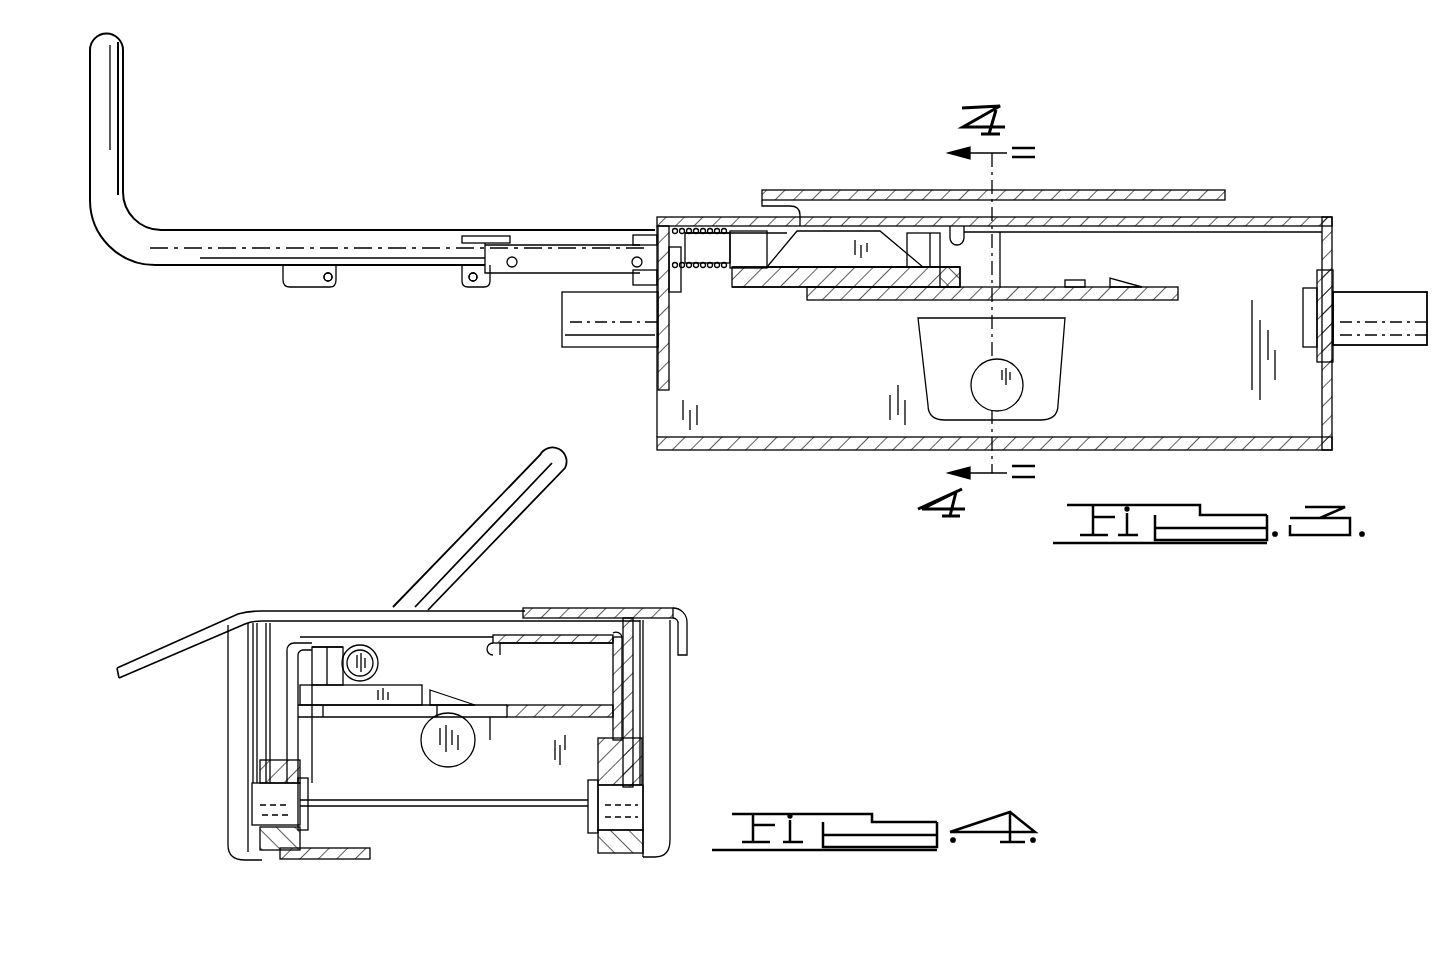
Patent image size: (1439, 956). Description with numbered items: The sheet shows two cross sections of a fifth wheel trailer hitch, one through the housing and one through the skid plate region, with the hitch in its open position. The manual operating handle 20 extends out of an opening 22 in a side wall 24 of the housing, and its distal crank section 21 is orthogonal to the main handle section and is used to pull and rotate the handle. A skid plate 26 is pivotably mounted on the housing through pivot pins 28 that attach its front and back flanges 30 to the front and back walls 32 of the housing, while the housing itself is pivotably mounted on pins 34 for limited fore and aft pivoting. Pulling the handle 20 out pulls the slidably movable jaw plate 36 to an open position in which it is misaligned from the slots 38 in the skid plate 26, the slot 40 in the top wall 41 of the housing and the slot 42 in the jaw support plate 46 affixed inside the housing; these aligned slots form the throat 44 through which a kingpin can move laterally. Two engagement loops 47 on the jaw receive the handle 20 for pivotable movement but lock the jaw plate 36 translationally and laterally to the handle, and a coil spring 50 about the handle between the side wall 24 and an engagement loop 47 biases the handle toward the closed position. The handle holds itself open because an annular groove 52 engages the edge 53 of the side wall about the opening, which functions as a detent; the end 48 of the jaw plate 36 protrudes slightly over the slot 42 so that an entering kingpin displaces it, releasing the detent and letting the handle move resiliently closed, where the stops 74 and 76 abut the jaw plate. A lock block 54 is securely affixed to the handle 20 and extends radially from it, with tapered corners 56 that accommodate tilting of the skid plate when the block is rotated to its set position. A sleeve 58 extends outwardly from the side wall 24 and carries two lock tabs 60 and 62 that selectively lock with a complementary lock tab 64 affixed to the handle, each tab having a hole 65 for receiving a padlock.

In FIG. 3, the manual operating handle 20 is at (370, 235).
In FIG. 4, the manual operating handle 20 is at (380, 663).
In FIG. 3, the distal crank section 21 is at (113, 100).
In FIG. 4, the distal crank section 21 is at (488, 508).
In FIG. 3, the opening 22 is at (648, 236).
In FIG. 3, the side wall 24 is at (672, 385).
In FIG. 4, the side wall 24 is at (368, 787).
In FIG. 3, the skid plate 26 is at (1180, 192).
In FIG. 4, the skid plate 26 is at (600, 610).
In FIG. 3, the pivot pins 28 is at (1020, 385).
In FIG. 4, the pivot pins 28 is at (275, 805).
In FIG. 4, the front and back flanges 30 is at (235, 770).
In FIG. 4, the front and back walls 32 is at (290, 778).
In FIG. 3, the pins 34 is at (580, 347).
In FIG. 4, the pins 34 is at (445, 755).
In FIG. 3, the jaw plate 36 is at (765, 290).
In FIG. 4, the jaw plate 36 is at (405, 705).
In FIG. 3, the slots 38 is at (1035, 190).
In FIG. 4, the slots 38 is at (350, 615).
In FIG. 3, the slot 40 is at (957, 243).
In FIG. 4, the slot 40 is at (505, 640).
In FIG. 3, the top wall 41 is at (1290, 215).
In FIG. 4, the top wall 41 is at (555, 645).
In FIG. 3, the slot 42 is at (1010, 300).
In FIG. 4, the slot 42 is at (492, 720).
In FIG. 3, the throat 44 is at (1065, 255).
In FIG. 4, the throat 44 is at (245, 725).
In FIG. 3, the jaw support plate 46 is at (855, 300).
In FIG. 4, the jaw support plate 46 is at (540, 720).
In FIG. 3, the engagement loops 47 is at (745, 255).
In FIG. 4, the engagement loops 47 is at (340, 648).
In FIG. 3, the end 48 is at (975, 272).
In FIG. 3, the coil spring 50 is at (712, 232).
In FIG. 3, the annular groove 52 is at (678, 235).
In FIG. 3, the edge 53 is at (575, 322).
In FIG. 3, the lock block 54 is at (812, 250).
In FIG. 4, the lock block 54 is at (320, 650).
In FIG. 3, the tapered corners 56 is at (795, 233).
In FIG. 4, the tapered corners 56 is at (310, 625).
In FIG. 3, the sleeve 58 is at (530, 273).
In FIG. 3, the lock tab 60 is at (488, 287).
In FIG. 3, the lock tab 62 is at (500, 235).
In FIG. 3, the lock tab 64 is at (288, 288).
In FIG. 3, the hole 65 is at (325, 290).
In FIG. 3, the stop 74 is at (1135, 284).
In FIG. 3, the stop 76 is at (1080, 280).